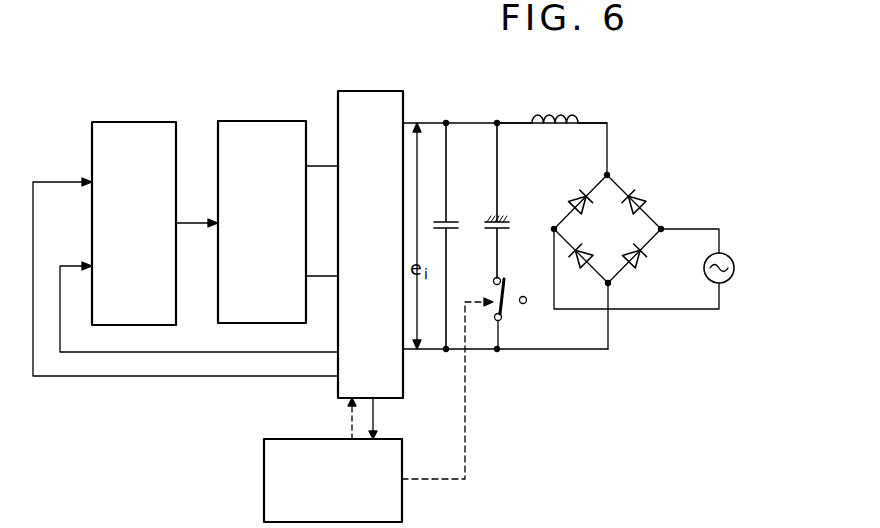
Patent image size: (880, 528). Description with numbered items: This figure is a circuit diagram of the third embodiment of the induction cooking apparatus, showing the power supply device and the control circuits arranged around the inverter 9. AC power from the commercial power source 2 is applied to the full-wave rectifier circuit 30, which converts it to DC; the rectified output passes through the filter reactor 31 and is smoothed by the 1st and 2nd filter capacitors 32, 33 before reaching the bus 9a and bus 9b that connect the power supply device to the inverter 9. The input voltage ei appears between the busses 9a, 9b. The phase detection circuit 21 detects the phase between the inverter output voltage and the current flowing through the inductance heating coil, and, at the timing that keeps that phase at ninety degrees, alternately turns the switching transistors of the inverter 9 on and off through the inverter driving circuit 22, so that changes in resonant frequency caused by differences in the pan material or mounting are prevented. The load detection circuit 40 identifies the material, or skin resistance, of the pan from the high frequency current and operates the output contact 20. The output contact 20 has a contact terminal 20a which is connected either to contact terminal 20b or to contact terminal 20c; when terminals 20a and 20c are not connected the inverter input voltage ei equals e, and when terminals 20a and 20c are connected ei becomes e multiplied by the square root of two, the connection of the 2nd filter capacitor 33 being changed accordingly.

The commercial power source 2 is at (736, 268).
The inverter 9 is at (367, 91).
The bus 9a is at (428, 120).
The bus 9b is at (446, 350).
The output contact 20 is at (502, 321).
The contact terminal 20a is at (496, 326).
The contact terminal 20b is at (523, 296).
The contact terminal 20c is at (493, 279).
The phase detection circuit 21 is at (129, 122).
The inverter driving circuit 22 is at (260, 121).
The full-wave rectifier circuit 30 is at (630, 181).
The filter reactor 31 is at (551, 119).
The 1st filter capacitor 32 is at (452, 218).
The 2nd filter capacitor 33 is at (504, 218).
The load detection circuit 40 is at (264, 479).